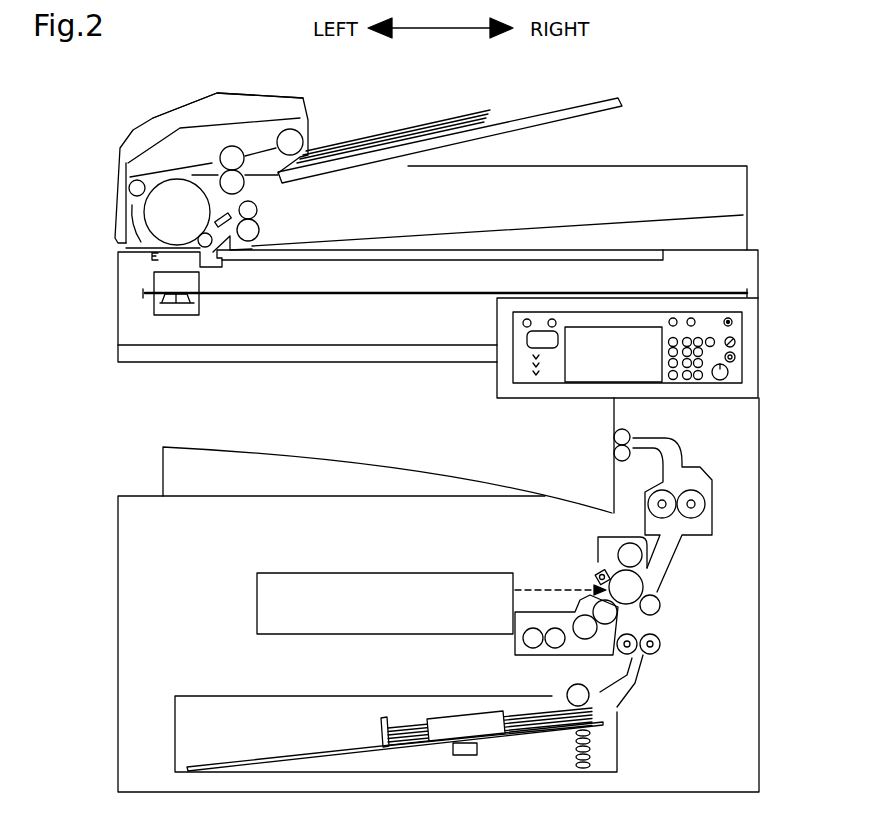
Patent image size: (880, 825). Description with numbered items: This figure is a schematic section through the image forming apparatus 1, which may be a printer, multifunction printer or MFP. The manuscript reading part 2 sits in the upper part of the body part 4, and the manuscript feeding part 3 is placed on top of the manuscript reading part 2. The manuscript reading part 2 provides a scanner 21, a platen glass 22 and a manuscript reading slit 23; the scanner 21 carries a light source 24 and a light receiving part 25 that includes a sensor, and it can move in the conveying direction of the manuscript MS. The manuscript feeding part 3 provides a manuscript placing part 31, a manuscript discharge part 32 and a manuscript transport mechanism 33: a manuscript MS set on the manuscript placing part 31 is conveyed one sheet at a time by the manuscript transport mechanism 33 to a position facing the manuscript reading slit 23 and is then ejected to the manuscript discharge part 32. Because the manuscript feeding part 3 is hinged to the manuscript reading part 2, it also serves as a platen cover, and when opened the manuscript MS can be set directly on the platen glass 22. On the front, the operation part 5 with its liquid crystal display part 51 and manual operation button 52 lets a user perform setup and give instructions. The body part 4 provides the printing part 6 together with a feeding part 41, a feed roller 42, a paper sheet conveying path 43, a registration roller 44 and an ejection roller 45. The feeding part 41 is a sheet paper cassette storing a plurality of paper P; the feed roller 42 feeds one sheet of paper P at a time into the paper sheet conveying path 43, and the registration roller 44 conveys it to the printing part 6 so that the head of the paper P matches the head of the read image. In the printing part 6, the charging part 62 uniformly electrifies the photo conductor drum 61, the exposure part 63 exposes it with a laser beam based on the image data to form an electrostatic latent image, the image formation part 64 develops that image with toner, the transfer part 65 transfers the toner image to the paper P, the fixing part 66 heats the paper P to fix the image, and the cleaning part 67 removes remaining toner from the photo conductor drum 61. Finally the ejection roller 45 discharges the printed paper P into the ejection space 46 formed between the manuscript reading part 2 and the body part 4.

The image forming apparatus 1 is at (738, 47).
The manuscript reading part 2 is at (90, 298).
The manuscript feeding part 3 is at (90, 180).
The body part 4 is at (90, 561).
The operation part 5 is at (821, 292).
The printing part 6 is at (505, 550).
The scanner 21 is at (190, 317).
The platen glass 22 is at (421, 255).
The manuscript reading slit 23 is at (151, 257).
The light source 24 is at (160, 294).
The light receiving part 25 is at (197, 292).
The manuscript placing part 31 is at (591, 103).
The manuscript discharge part 32 is at (512, 228).
The manuscript transport mechanism 33 is at (245, 93).
The feeding part 41 is at (619, 732).
The feed roller 42 is at (567, 694).
The paper sheet conveying path 43 is at (642, 677).
The registration roller 44 is at (662, 643).
The ejection roller 45 is at (613, 430).
The ejection space 46 is at (367, 458).
The liquid crystal display part 51 is at (647, 337).
The manual operation button 52 is at (717, 343).
The photo conductor drum 61 is at (638, 582).
The charging part 62 is at (601, 570).
The exposure part 63 is at (295, 612).
The image formation part 64 is at (515, 645).
The transfer part 65 is at (661, 607).
The fixing part 66 is at (643, 503).
The cleaning part 67 is at (603, 538).
The manuscript MS is at (407, 131).
The paper P is at (418, 722).